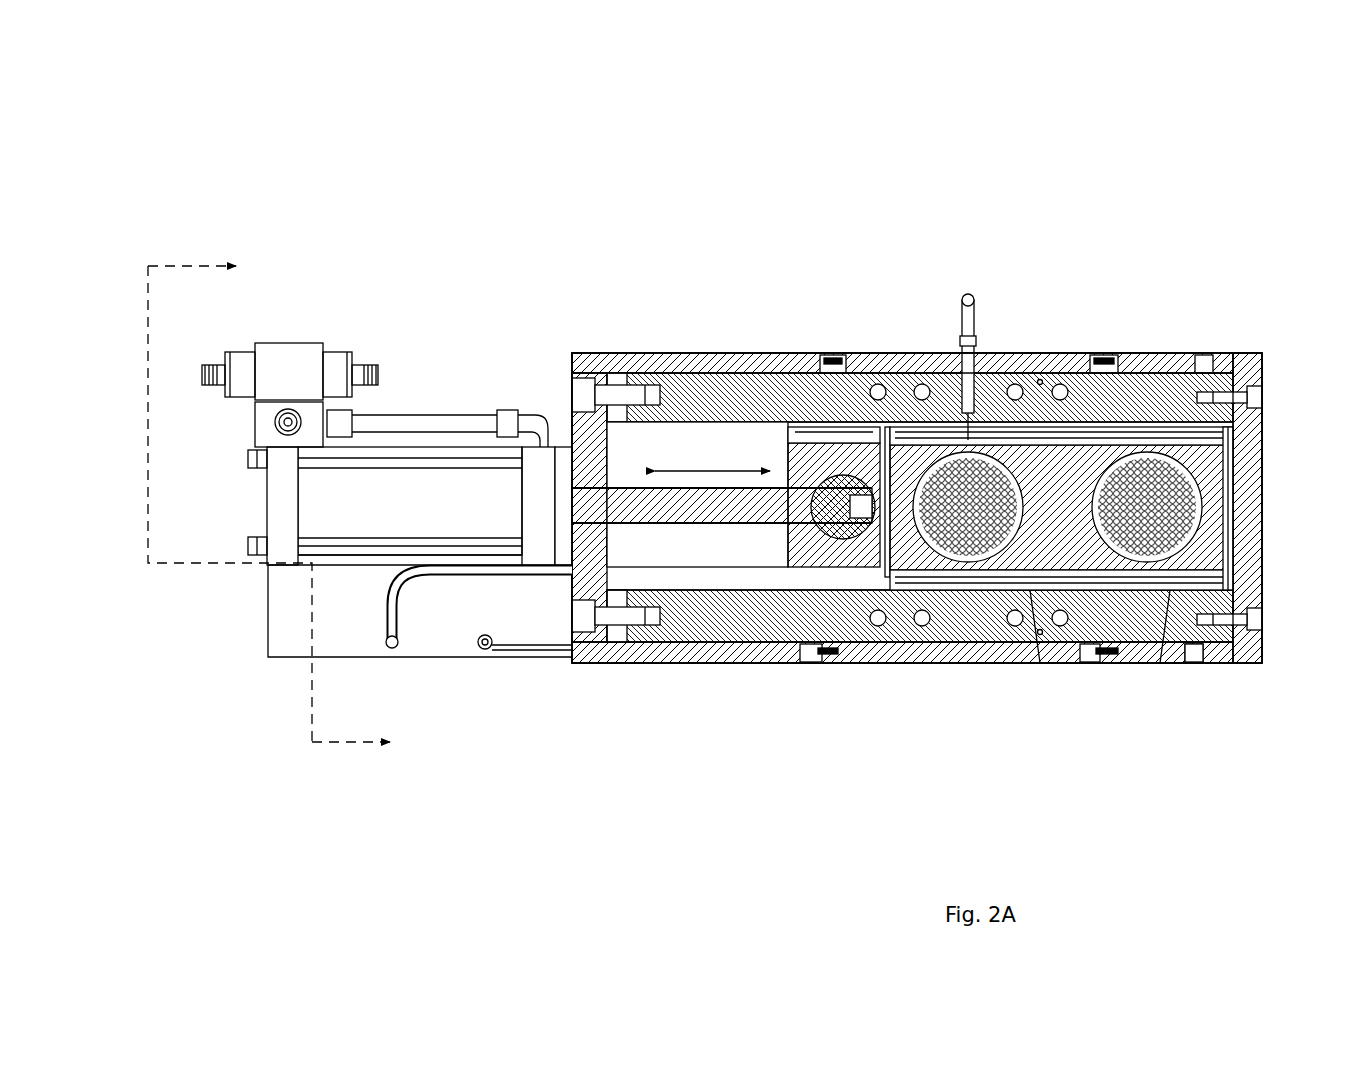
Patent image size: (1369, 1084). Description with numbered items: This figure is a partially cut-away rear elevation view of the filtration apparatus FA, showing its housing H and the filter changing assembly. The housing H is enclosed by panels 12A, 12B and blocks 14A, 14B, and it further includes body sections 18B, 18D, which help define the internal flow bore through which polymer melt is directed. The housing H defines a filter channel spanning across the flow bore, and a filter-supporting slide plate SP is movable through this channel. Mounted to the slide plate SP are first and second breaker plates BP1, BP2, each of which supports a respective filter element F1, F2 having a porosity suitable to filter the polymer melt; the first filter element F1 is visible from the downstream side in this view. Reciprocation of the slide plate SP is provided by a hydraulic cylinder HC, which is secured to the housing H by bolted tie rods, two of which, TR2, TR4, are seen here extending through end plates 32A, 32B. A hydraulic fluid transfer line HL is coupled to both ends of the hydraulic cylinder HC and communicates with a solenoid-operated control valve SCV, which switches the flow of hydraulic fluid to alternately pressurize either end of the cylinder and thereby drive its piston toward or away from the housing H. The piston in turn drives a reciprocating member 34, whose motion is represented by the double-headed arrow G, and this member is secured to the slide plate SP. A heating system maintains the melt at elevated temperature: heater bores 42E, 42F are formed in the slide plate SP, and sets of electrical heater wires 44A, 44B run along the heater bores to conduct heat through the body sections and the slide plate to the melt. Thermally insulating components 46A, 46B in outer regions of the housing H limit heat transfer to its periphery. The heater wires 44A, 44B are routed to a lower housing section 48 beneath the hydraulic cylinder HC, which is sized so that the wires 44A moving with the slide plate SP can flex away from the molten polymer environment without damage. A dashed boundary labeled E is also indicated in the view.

The block 14B is at (575, 353).
The block 14A is at (1280, 368).
The panel 12A is at (714, 353).
The panel 12B is at (883, 663).
The body section 18B is at (782, 353).
The body section 18D is at (685, 658).
The end plate 32A is at (550, 472).
The end plate 32B is at (267, 527).
The reciprocating member 34 is at (745, 523).
The heater bore 42E is at (1070, 355).
The heater bore 42F is at (1170, 592).
The thermally insulating component 46A is at (1205, 355).
The thermally insulating component 46B is at (1220, 663).
The electrical heater wires 44A is at (408, 600).
The electrical heater wires 44B is at (527, 650).
The lower housing section 48 is at (263, 635).
The first breaker plate BP1 is at (943, 573).
The second breaker plate BP2 is at (1147, 562).
The first filter element F1 is at (1053, 663).
The second filter element F2 is at (1152, 663).
The slide plate SP is at (1227, 520).
The hydraulic cylinder HC is at (410, 501).
The hydraulic fluid transfer line HL is at (435, 415).
The solenoid-operated control valve SCV is at (290, 343).
The tie rod TR2 is at (338, 470).
The tie rod TR4 is at (338, 540).
The double-headed arrow G is at (688, 470).
The enclosure boundary E is at (178, 262).
The housing H is at (1027, 248).
The filtration apparatus FA is at (1168, 173).